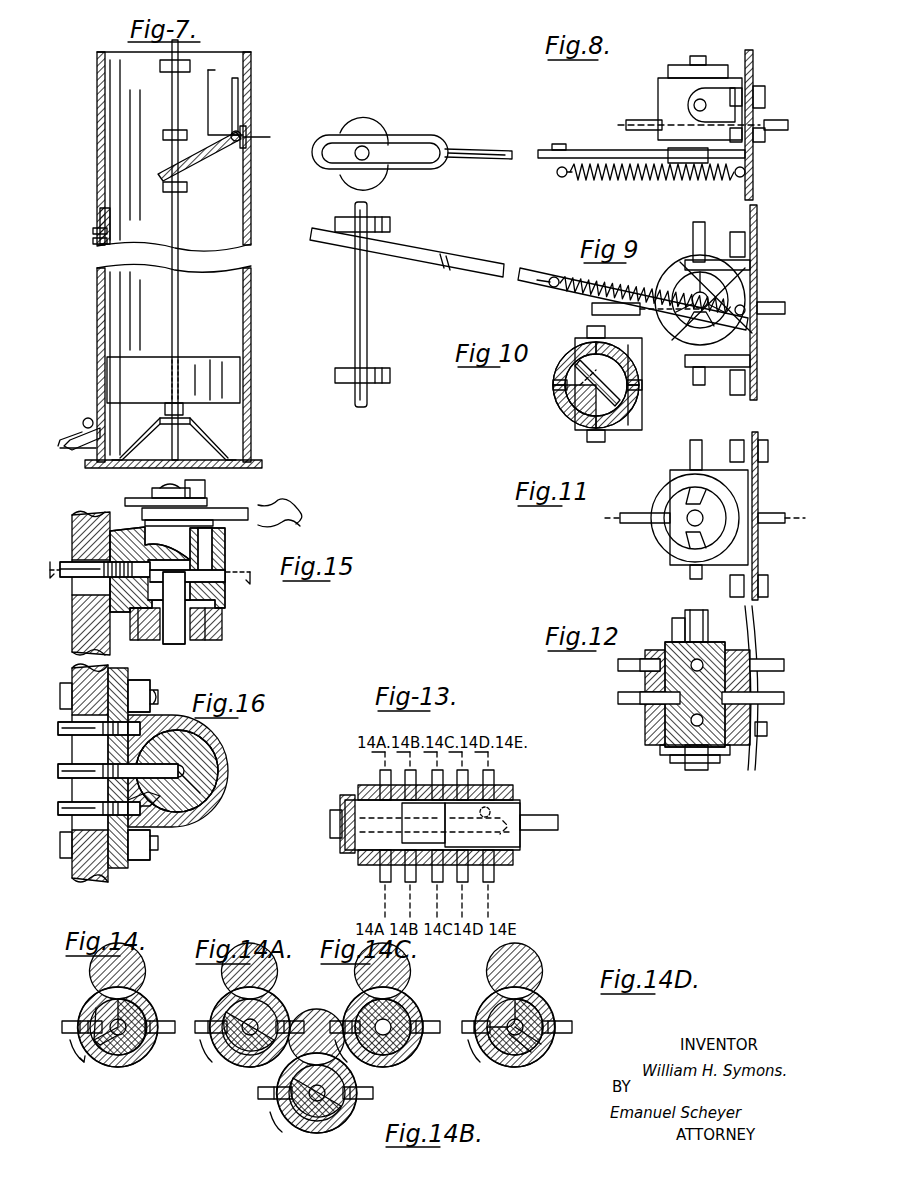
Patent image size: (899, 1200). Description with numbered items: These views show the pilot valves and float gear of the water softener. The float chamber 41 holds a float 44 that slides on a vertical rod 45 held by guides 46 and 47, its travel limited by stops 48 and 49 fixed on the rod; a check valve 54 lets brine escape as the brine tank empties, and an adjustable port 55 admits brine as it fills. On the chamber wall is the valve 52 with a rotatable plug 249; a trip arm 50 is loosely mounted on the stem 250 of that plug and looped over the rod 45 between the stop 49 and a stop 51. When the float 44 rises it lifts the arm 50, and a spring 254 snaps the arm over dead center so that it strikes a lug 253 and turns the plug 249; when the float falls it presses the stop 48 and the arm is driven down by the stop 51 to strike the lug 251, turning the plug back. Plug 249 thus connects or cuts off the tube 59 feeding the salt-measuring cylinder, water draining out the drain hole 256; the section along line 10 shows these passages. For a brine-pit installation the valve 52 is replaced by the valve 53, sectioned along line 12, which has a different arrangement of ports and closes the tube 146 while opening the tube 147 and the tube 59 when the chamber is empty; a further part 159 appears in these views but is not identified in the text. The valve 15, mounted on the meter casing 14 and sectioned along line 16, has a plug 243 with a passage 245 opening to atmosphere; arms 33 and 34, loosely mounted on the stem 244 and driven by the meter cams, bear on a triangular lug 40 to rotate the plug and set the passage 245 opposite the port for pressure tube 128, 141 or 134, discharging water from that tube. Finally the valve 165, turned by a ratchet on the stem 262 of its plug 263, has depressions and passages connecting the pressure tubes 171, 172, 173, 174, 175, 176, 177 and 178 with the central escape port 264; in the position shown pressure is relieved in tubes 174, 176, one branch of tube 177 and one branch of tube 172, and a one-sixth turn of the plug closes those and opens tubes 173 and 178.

In FIG. 8, the section line 10— 10 is at (600, 125).
In FIG. 11, the section line 12— 12 is at (596, 512).
In FIG. 15, the casing 14 is at (106, 652).
In FIG. 16, the casing 14 is at (108, 672).
In FIG. 15, the valve 15 is at (224, 558).
In FIG. 16, the valve 15 is at (196, 824).
In FIG. 15, the section line 16— 16 is at (150, 583).
In FIG. 15, the arm 33 is at (134, 500).
In FIG. 15, the arm 34 is at (234, 520).
In FIG. 15, the lug 40 is at (206, 490).
In FIG. 7, the float chamber 41 is at (98, 106).
In FIG. 8, the float chamber 41 is at (753, 188).
In FIG. 9, the float chamber 41 is at (756, 205).
In FIG. 12, the float chamber 41 is at (758, 610).
In FIG. 7, the float 44 is at (220, 360).
In FIG. 7, the rod 45 is at (182, 298).
In FIG. 7, the guide 46 is at (202, 436).
In FIG. 7, the guide 47 is at (160, 66).
In FIG. 7, the stop 48 is at (168, 404).
In FIG. 7, the stop 49 is at (187, 188).
In FIG. 7, the trip arm 50 is at (206, 153).
In FIG. 7, the stop 51 is at (163, 135).
In FIG. 7, the valve 52 is at (242, 134).
In FIG. 8, the valve 52 is at (666, 84).
In FIG. 9, the valve 52 is at (662, 268).
In FIG. 10, the valve 52 is at (572, 398).
In FIG. 11, the valve 53 is at (668, 546).
In FIG. 12, the valve 53 is at (706, 770).
In FIG. 7, the check valve 54 is at (82, 420).
In FIG. 7, the port 55 is at (98, 202).
In FIG. 7, the tube 59 is at (282, 152).
In FIG. 8, the tube 59 is at (618, 98).
In FIG. 9, the tube 59 is at (592, 306).
In FIG. 10, the tube 59 is at (556, 384).
In FIG. 11, the tube 59 is at (616, 528).
In FIG. 12, the tube 59 is at (620, 698).
In FIG. 16, the pressure tube 128 is at (74, 738).
In FIG. 16, the pressure tube 134 is at (56, 810).
In FIG. 15, the pressure tube 141 is at (78, 562).
In FIG. 16, the pressure tube 141 is at (74, 780).
In FIG. 11, the tube 146 is at (640, 497).
In FIG. 12, the tube 146 is at (618, 664).
In FIG. 11, the tube 147 is at (694, 446).
In FIG. 12, the tube 147 is at (652, 725).
In FIG. 7, the post 159 is at (238, 88).
In FIG. 8, the post 159 is at (697, 106).
In FIG. 9, the post 159 is at (700, 222).
In FIG. 10, the post 159 is at (588, 330).
In FIG. 13, the valve 165 is at (514, 856).
In FIG. 14, the valve 165 is at (124, 992).
In FIG. 14D, the valve 165 is at (526, 994).
In FIG. 13, the pressure tube 171 is at (492, 884).
In FIG. 14D, the pressure tube 171 is at (470, 1020).
In FIG. 13, the pressure tube 172 is at (440, 884).
In FIG. 14B, the pressure tube 172 is at (298, 1071).
In FIG. 14C, the pressure tube 172 is at (330, 1030).
In FIG. 13, the pressure tube 173 is at (410, 884).
In FIG. 14A, the pressure tube 173 is at (210, 1020).
In FIG. 13, the pressure tube 174 is at (378, 884).
In FIG. 14, the pressure tube 174 is at (76, 1016).
In FIG. 13, the pressure tube 175 is at (378, 772).
In FIG. 14, the pressure tube 175 is at (166, 1038).
In FIG. 13, the pressure tube 176 is at (408, 772).
In FIG. 14A, the pressure tube 176 is at (292, 1018).
In FIG. 13, the pressure tube 177 is at (434, 772).
In FIG. 14B, the pressure tube 177 is at (370, 1104).
In FIG. 14C, the pressure tube 177 is at (428, 1018).
In FIG. 13, the pressure tube 178 is at (490, 772).
In FIG. 14D, the pressure tube 178 is at (570, 1018).
In FIG. 15, the plug 243 is at (226, 604).
In FIG. 16, the plug 243 is at (214, 750).
In FIG. 15, the stem 244 is at (170, 482).
In FIG. 15, the passage 245 is at (186, 640).
In FIG. 16, the passage 245 is at (218, 800).
In FIG. 9, the plug 249 is at (743, 290).
In FIG. 10, the plug 249 is at (568, 412).
In FIG. 9, the stem 250 is at (752, 336).
In FIG. 9, the lug 251 is at (684, 332).
In FIG. 8, the lug 253 is at (668, 150).
In FIG. 9, the lug 253 is at (680, 290).
In FIG. 8, the spring 254 is at (650, 182).
In FIG. 9, the spring 254 is at (568, 272).
In FIG. 10, the drain hole 256 is at (632, 410).
In FIG. 13, the stem 262 is at (556, 818).
In FIG. 13, the plug 263 is at (512, 806).
In FIG. 14C, the plug 263 is at (384, 1006).
In FIG. 13, the central escape port 264 is at (345, 826).
In FIG. 14, the central escape port 264 is at (112, 998).
In FIG. 14D, the central escape port 264 is at (516, 998).